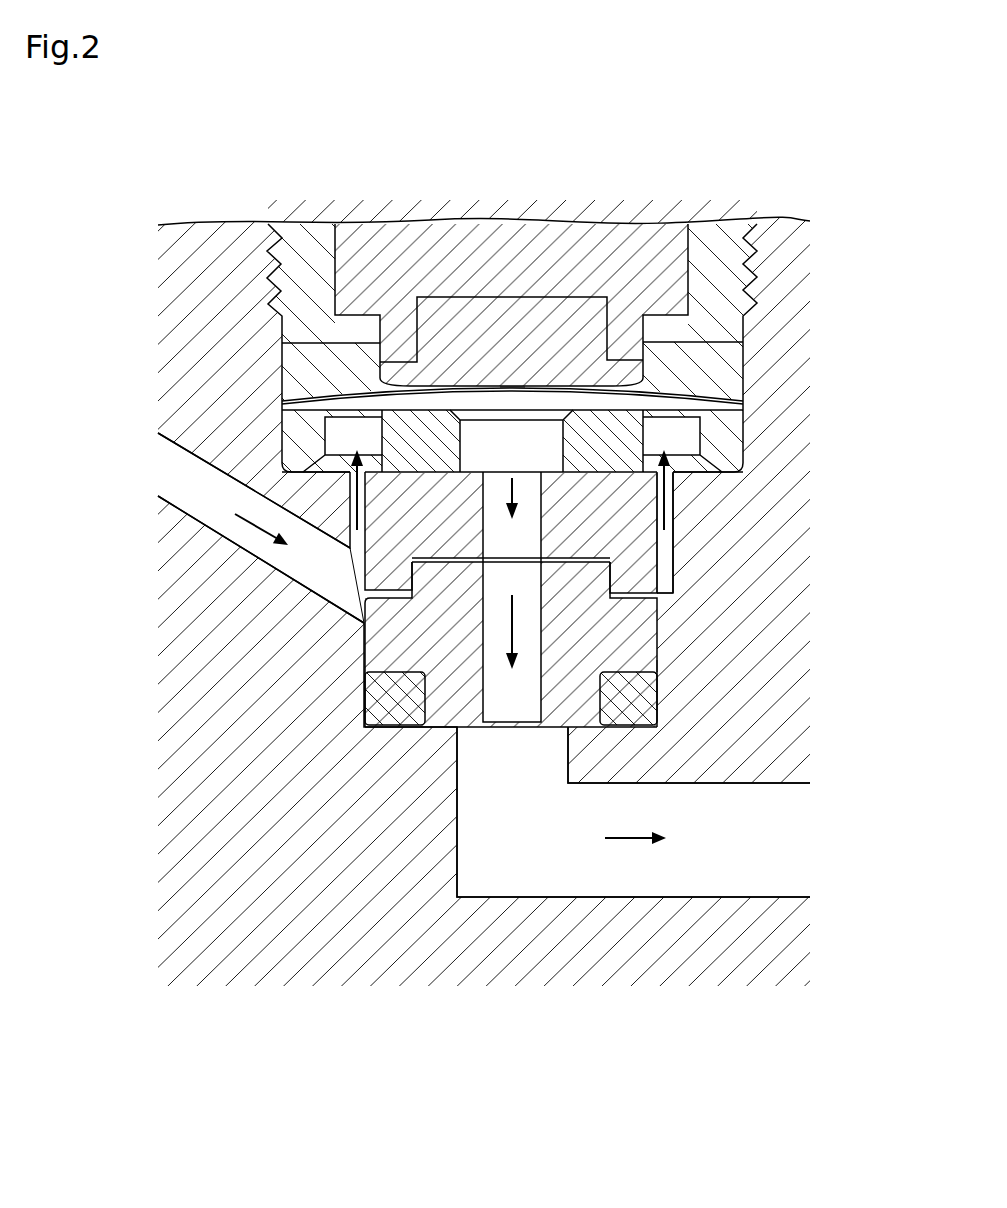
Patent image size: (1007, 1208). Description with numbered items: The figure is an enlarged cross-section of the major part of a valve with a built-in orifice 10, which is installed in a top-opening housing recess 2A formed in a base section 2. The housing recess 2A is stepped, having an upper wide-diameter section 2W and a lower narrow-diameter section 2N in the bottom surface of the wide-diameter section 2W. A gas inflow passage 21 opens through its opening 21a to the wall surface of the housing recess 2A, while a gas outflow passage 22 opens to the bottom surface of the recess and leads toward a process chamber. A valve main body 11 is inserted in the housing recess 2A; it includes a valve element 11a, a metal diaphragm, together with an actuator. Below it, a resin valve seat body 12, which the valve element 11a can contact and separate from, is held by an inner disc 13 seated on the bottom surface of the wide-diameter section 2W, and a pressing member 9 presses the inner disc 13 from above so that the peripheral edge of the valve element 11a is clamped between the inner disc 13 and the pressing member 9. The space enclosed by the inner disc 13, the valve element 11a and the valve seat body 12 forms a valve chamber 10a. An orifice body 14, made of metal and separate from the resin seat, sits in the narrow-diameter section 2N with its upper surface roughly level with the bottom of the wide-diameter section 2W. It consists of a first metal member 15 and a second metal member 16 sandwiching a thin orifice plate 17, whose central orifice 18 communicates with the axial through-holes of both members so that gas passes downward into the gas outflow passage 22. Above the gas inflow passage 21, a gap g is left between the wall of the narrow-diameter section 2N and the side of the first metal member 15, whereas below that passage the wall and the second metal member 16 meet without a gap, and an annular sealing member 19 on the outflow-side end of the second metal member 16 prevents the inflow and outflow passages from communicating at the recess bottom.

The base section 2 is at (218, 290).
The housing recess 2A is at (743, 413).
The wide-diameter section 2W is at (743, 443).
The narrow-diameter section 2N is at (677, 530).
The pressing member 9 is at (744, 357).
The valve with a built-in orifice 10 is at (733, 216).
The valve chamber 10a is at (538, 400).
The valve main body 11 is at (530, 262).
The valve element 11a is at (410, 384).
The valve seat body 12 is at (320, 402).
The inner disc 13 is at (430, 448).
The orifice body 14 is at (462, 764).
The first metal member 15 is at (366, 600).
The second metal member 16 is at (367, 712).
The orifice plate 17 is at (366, 650).
The orifice 18 is at (518, 562).
The sealing member 19 is at (395, 724).
The gas inflow passage 21 is at (214, 503).
The opening 21a is at (348, 577).
The gas outflow passage 22 is at (705, 862).
The gap g is at (667, 552).